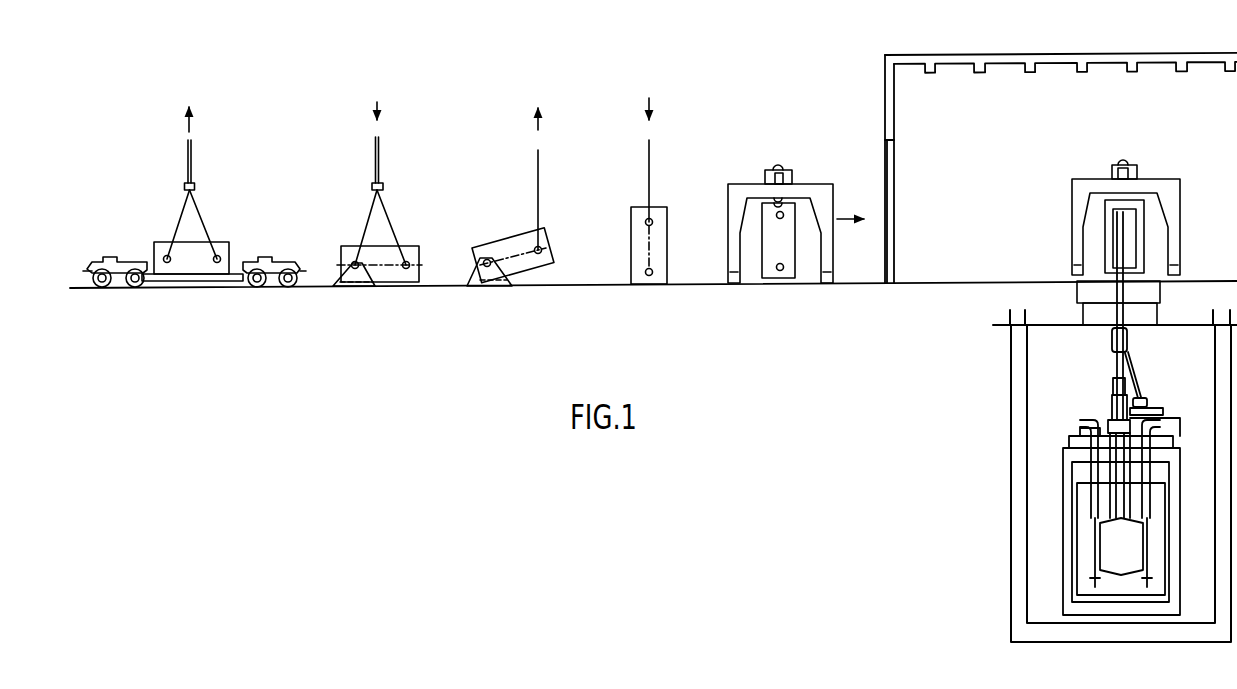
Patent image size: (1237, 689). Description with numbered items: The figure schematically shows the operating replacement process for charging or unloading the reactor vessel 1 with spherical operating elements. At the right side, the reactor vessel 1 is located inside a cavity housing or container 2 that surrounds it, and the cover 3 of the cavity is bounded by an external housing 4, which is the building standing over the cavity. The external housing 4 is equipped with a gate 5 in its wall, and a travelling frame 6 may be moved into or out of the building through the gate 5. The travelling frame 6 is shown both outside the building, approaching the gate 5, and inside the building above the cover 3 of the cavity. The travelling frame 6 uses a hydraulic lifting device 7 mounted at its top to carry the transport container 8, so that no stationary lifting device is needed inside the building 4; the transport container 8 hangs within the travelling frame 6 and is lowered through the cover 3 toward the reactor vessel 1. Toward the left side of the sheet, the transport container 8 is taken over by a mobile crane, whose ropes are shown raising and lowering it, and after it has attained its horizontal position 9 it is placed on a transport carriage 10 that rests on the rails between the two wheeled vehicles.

The reactor vessel 1 is at (1056, 521).
The cavity housing or container 2 is at (1011, 440).
The cover of the cavity 3 is at (1023, 297).
The external housing 4 is at (886, 88).
The gate 5 is at (886, 158).
The travelling frame 6 is at (1080, 218).
The hydraulic lifting device 7 is at (1140, 170).
The transport container 8 is at (223, 243).
The horizontal position 9 is at (412, 232).
The transport carriage 10 is at (240, 283).